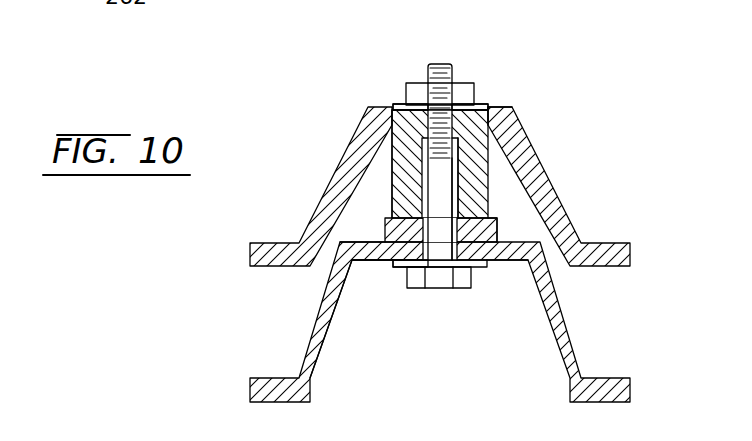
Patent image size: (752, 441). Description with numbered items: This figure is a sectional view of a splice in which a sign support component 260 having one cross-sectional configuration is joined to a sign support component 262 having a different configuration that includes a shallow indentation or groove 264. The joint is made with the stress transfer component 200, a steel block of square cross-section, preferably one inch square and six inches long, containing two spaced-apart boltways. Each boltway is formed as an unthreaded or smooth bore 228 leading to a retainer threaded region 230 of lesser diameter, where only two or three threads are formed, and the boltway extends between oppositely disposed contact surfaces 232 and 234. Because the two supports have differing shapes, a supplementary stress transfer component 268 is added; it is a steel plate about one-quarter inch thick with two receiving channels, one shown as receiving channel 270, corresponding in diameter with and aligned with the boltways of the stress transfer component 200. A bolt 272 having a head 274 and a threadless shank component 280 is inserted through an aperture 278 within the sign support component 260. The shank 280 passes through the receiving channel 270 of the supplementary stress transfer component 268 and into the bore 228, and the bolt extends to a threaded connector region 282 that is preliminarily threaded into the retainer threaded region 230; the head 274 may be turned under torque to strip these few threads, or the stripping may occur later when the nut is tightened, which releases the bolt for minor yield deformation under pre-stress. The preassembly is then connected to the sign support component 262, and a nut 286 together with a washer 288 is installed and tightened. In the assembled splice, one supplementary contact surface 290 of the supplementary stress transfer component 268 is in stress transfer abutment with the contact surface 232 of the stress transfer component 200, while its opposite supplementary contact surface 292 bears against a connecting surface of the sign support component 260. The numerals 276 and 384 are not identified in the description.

The stress transfer component 200 is at (390, 178).
The smooth bore 228 is at (455, 156).
The retainer threaded region 230 is at (405, 126).
The contact surface 232 is at (497, 230).
The contact surface 234 is at (502, 108).
The sign support component 260 is at (563, 333).
The sign support component 262 is at (540, 182).
The groove 264 is at (493, 108).
The supplementary stress transfer component 268 is at (392, 221).
The receiving channel 270 is at (376, 244).
The bolt 272 is at (447, 336).
The head 274 is at (441, 289).
The lower washer 276 is at (485, 268).
The aperture 278 is at (395, 265).
The threadless shank component 280 is at (445, 199).
The threaded connector region 282 is at (437, 130).
The nut 286 is at (418, 83).
The washer 288 is at (473, 105).
The supplementary contact surface 290 is at (468, 214).
The supplementary contact surface 292 is at (340, 245).
The washer portion 384 is at (422, 105).